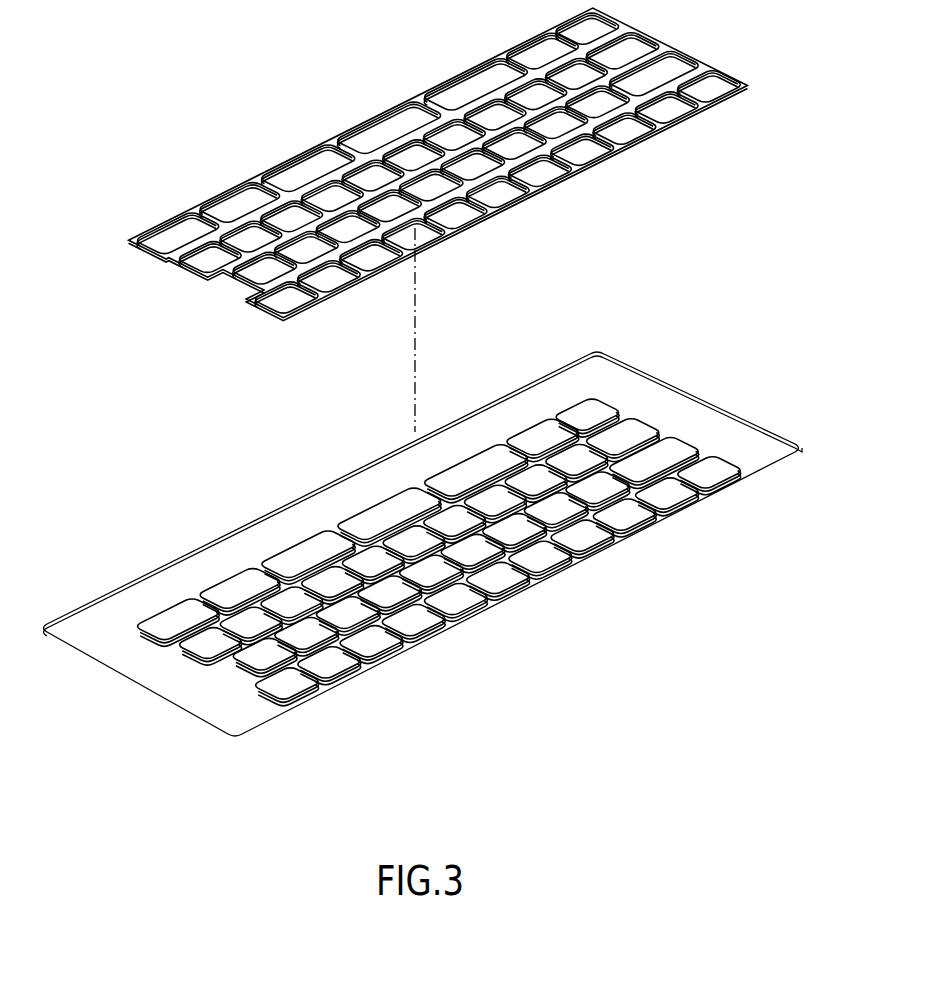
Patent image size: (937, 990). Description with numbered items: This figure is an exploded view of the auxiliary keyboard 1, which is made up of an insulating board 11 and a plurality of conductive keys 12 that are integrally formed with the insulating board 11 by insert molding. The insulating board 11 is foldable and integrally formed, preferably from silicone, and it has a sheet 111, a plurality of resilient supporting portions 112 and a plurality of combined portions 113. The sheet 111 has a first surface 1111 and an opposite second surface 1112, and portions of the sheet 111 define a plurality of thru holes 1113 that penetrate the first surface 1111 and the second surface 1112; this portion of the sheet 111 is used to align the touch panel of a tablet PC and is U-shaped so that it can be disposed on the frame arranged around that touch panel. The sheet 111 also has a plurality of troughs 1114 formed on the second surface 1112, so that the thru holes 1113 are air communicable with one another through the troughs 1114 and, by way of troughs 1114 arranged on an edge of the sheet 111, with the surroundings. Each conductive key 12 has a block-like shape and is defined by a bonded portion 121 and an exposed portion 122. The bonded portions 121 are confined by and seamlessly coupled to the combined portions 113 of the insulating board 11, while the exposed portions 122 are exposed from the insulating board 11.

The auxiliary keyboard 1 is at (80, 163).
The insulating board 11 is at (232, 514).
The sheet 111 is at (762, 348).
The first surface 1111 is at (768, 428).
The second surface 1112 is at (770, 452).
The resilient supporting portions 112 is at (456, 600).
The combined portions 113 is at (475, 608).
The thru holes 1113 is at (279, 728).
The troughs 1114 is at (341, 668).
The conductive keys 12 is at (341, 120).
The bonded portion 121 is at (290, 300).
The exposed portion 122 is at (262, 293).